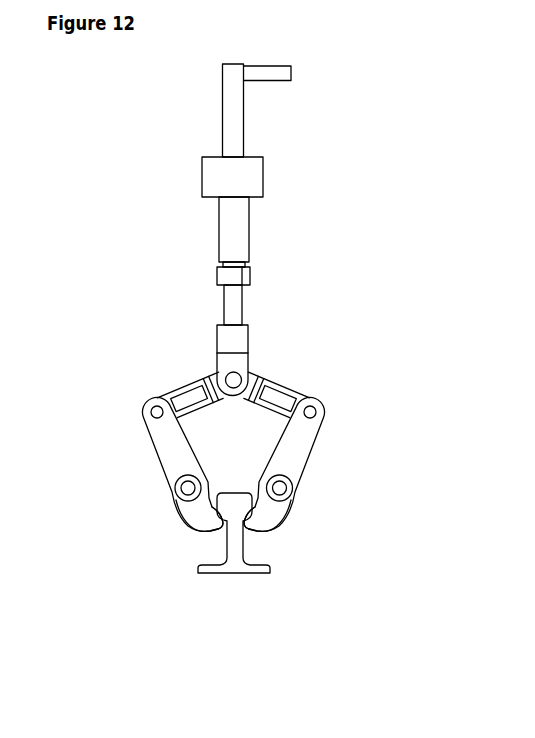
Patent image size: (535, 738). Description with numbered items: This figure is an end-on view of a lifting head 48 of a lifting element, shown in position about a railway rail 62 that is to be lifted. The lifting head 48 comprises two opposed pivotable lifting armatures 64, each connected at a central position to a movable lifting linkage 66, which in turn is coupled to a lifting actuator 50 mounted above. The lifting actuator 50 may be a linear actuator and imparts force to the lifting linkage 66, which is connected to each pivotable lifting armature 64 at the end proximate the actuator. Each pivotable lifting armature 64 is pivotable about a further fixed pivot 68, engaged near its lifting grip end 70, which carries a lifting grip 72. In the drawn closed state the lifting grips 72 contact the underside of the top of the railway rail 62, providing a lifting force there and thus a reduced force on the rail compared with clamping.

The lifting head 48 is at (236, 314).
The lifting actuator 50 is at (266, 63).
The railway rail 62 is at (234, 574).
The pivotable lifting armature 64 is at (147, 441).
The lifting linkage 66 is at (262, 369).
The further fixed pivot 68 is at (175, 482).
The lifting grip end 70 is at (187, 531).
The lifting grip 72 is at (202, 534).